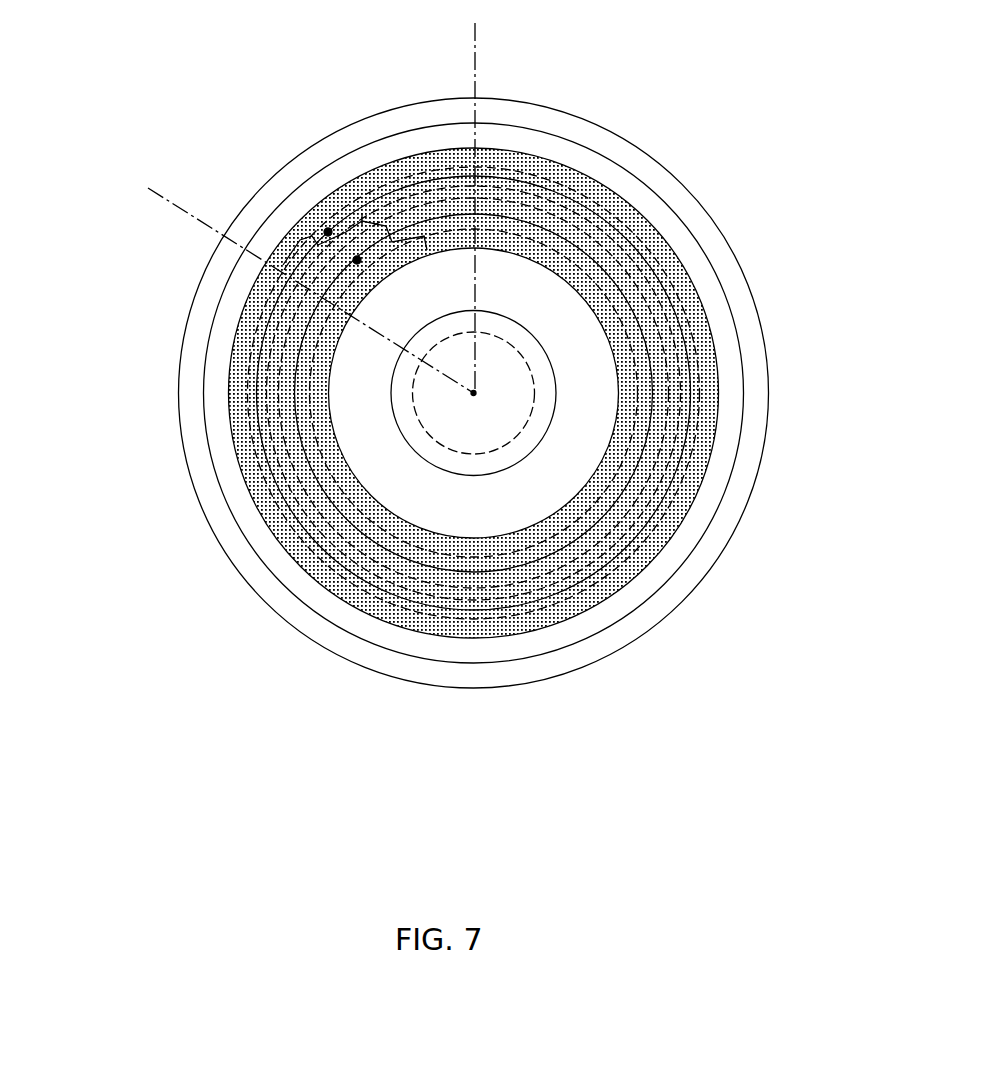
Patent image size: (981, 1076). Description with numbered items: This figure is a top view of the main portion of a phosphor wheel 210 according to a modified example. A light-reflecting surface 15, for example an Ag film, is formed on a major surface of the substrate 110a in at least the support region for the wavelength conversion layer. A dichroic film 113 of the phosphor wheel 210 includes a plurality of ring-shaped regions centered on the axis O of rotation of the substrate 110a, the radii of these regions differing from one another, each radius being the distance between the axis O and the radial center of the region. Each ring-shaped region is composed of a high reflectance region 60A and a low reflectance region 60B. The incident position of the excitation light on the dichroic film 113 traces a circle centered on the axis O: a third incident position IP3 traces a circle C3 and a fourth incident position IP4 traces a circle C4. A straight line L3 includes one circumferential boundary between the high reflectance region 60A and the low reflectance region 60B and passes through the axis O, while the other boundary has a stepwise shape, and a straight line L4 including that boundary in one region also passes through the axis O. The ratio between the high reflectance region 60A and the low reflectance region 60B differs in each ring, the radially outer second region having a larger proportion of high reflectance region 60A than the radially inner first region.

The phosphor wheel 210 is at (732, 126).
The substrate 110a is at (690, 577).
The dichroic film 113 is at (718, 390).
The light-reflecting surface 15 is at (538, 647).
The high reflectance region 60A is at (280, 213).
The low reflectance region 60B is at (222, 345).
The axis of rotation O is at (474, 393).
The straight line L3 is at (476, 45).
The straight line L4 is at (170, 205).
The circle C3 is at (580, 250).
The circle C4 is at (667, 287).
The third incident position IP3 is at (357, 260).
The fourth incident position IP4 is at (328, 232).